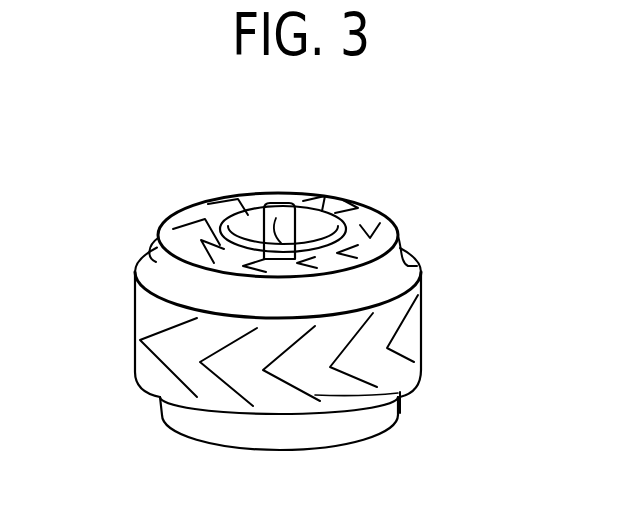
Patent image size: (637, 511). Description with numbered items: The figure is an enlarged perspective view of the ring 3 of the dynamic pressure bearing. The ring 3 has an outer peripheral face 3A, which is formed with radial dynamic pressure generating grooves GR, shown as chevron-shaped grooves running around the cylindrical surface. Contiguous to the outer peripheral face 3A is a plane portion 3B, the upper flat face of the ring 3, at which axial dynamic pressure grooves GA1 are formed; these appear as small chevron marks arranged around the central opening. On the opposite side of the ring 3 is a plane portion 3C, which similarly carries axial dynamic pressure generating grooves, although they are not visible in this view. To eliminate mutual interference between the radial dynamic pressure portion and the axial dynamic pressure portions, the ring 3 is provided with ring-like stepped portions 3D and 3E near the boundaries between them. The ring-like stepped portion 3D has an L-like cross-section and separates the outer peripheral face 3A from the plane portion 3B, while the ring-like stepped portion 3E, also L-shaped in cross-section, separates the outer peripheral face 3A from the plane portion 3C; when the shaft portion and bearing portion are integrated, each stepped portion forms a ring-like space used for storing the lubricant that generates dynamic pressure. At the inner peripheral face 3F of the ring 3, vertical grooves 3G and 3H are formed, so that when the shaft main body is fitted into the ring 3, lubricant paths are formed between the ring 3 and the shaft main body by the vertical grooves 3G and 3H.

The ring 3 is at (426, 196).
The outer peripheral face 3A is at (423, 315).
The plane portion 3B is at (323, 198).
The plane portion 3C is at (322, 451).
The ring-like stepped portion 3D is at (417, 266).
The ring-like stepped portion 3E is at (402, 400).
The inner peripheral face 3F is at (317, 244).
The vertical groove 3G is at (222, 227).
The vertical groove 3H is at (277, 262).
The axial dynamic pressure grooves GA1 is at (305, 205).
The radial dynamic pressure generating grooves GR is at (430, 370).